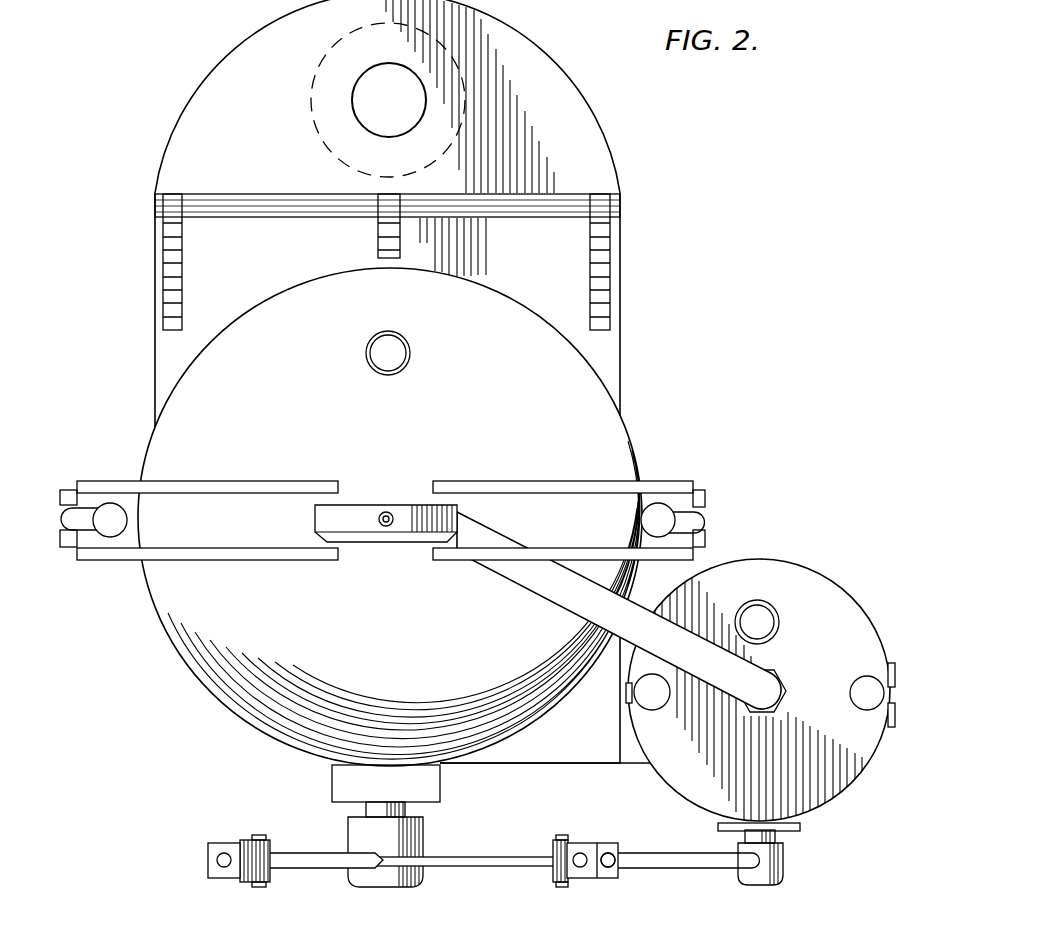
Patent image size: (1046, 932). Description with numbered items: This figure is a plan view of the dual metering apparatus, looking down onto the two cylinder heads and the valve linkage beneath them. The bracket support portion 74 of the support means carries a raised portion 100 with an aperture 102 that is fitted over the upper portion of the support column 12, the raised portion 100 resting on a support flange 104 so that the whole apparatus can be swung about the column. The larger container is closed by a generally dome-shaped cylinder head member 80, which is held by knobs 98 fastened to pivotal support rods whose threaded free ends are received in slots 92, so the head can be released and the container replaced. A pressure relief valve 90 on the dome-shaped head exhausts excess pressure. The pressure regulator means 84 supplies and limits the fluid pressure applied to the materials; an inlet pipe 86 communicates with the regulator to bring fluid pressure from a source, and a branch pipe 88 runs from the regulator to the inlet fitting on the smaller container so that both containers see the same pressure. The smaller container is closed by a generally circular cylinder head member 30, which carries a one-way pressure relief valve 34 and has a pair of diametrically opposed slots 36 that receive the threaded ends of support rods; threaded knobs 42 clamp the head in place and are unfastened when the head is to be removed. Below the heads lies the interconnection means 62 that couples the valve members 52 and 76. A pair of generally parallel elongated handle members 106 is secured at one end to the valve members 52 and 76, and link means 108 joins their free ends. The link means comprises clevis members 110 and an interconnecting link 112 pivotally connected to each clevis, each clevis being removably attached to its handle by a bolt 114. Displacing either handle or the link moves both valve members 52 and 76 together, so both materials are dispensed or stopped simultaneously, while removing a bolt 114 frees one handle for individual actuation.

The support column 12 is at (398, 118).
The cylinder head member 30 is at (845, 768).
The pressure relief valve 34 is at (780, 618).
The slots 36 is at (892, 665).
The threaded knobs 42 is at (860, 690).
The valve member 52 is at (783, 870).
The interconnection means 62 is at (486, 850).
The bracket support portion 74 is at (610, 345).
The valve member 76 is at (425, 870).
The dome-shaped cylinder head member 80 is at (585, 423).
The pressure regulator means 84 is at (406, 552).
The inlet pipe 86 is at (390, 512).
The branch pipe 88 is at (545, 585).
The pressure relief valve 90 is at (410, 353).
The slots 92 is at (88, 500).
The knobs 98 is at (118, 522).
The raised portion 100 is at (585, 135).
The aperture 102 is at (370, 122).
The support flange 104 is at (322, 81).
The handle members 106 is at (318, 850).
The link means 108 is at (440, 855).
The clevis members 110 is at (225, 843).
The interconnecting link 112 is at (500, 866).
The bolt 114 is at (610, 870).